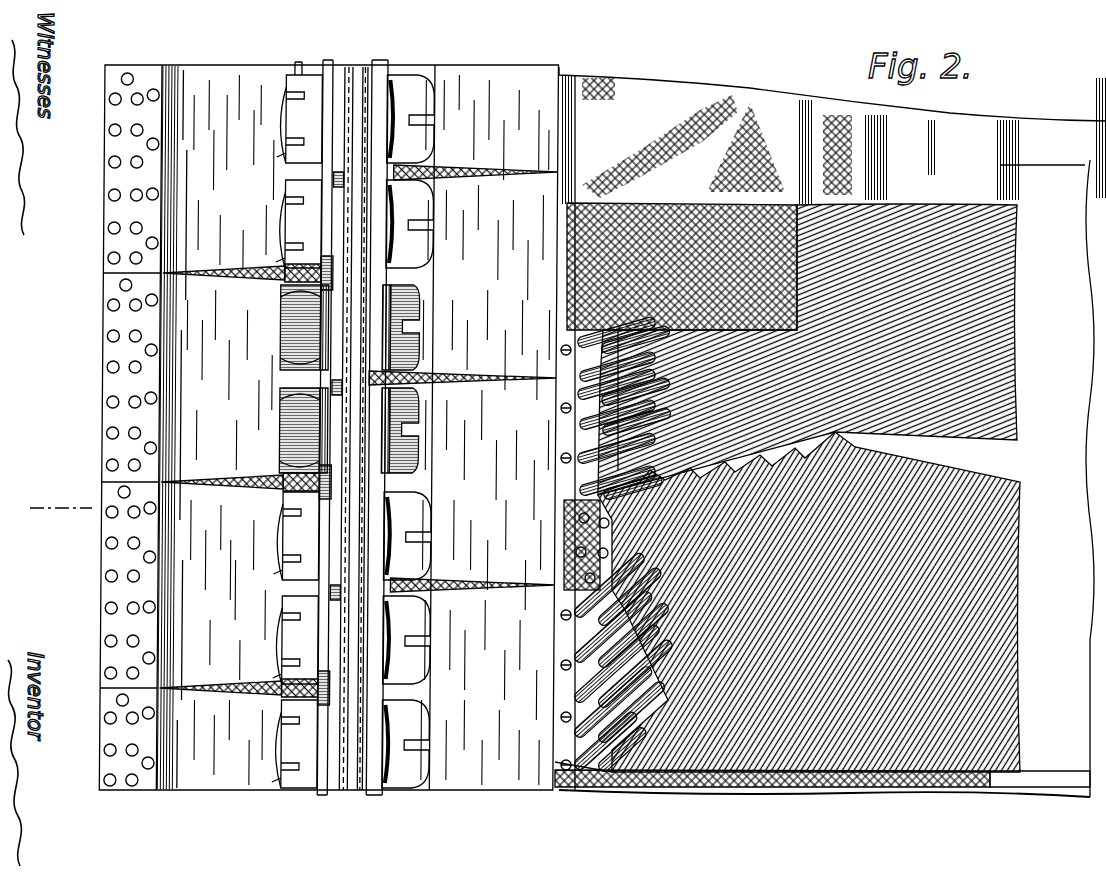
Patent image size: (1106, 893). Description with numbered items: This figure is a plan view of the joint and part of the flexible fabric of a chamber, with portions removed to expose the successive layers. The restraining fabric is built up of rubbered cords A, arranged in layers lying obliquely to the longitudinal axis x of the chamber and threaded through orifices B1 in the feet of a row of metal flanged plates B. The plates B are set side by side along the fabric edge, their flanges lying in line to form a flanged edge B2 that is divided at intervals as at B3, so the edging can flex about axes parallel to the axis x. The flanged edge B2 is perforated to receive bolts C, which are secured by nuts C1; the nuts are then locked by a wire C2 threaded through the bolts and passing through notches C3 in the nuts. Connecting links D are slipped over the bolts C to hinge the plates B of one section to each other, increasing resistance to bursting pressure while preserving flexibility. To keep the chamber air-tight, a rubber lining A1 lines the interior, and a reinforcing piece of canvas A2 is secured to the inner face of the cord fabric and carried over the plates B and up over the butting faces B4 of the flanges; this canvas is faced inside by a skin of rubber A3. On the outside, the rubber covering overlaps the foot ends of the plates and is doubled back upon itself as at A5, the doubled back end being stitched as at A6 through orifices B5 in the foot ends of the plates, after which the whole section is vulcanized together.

The rubbered cords A is at (1014, 426).
The rubber lining layer A1 is at (1003, 786).
The reinforcing piece of canvas A2 is at (748, 790).
The skin of rubber A3 is at (660, 790).
The doubled back end A5 is at (559, 100).
The stitching A6 is at (566, 566).
The flanged plates B is at (190, 212).
The orifices B1 is at (109, 161).
The flanged edge B2 is at (381, 76).
The divisions of the flanged edge B3 is at (392, 162).
The butting faces B4 is at (352, 793).
The orifices in foot ends B5 is at (158, 142).
The bolts C is at (421, 417).
The nuts C1 is at (310, 427).
The locking wire C2 is at (290, 580).
The notches C3 is at (287, 608).
The connecting plates or links D is at (323, 320).
The longitudinal axis x is at (48, 509).